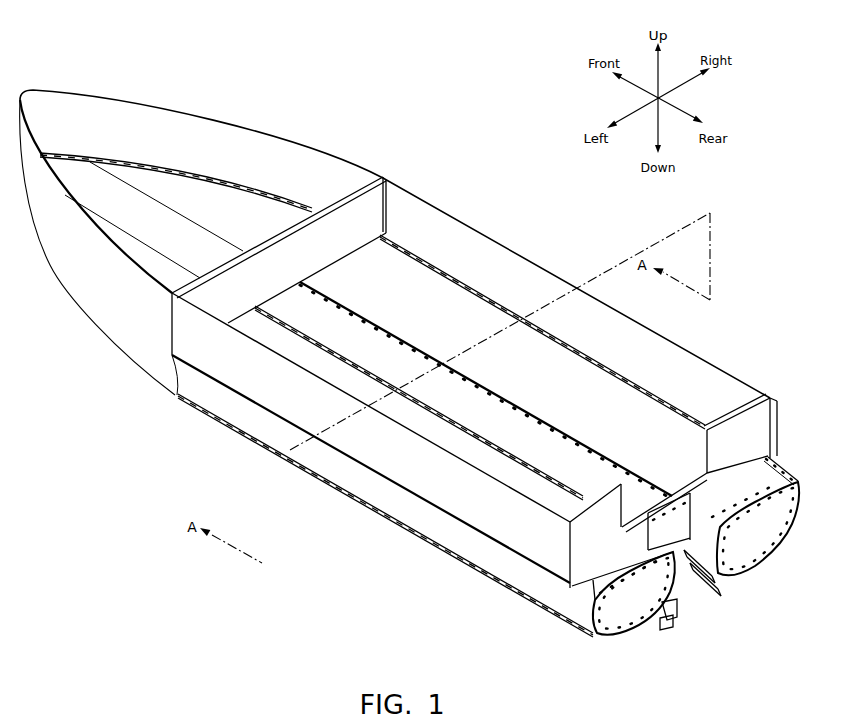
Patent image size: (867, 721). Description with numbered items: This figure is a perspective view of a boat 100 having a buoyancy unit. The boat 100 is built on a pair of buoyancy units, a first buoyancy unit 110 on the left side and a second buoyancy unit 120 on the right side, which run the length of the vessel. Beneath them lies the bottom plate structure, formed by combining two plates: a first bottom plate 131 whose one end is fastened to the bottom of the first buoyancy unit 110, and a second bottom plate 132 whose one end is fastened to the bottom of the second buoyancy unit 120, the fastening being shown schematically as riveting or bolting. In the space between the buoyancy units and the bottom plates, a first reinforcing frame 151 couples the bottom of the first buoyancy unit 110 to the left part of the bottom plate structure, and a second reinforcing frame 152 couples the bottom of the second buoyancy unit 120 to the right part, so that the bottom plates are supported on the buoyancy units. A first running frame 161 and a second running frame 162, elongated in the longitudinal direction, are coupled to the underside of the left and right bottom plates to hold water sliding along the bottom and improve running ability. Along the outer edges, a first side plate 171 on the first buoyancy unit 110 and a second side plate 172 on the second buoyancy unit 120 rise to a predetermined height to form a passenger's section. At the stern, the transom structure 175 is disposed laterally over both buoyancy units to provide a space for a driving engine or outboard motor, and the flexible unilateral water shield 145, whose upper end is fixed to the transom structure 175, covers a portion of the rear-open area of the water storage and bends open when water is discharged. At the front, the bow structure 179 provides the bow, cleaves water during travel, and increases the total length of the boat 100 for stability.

The boat 100 is at (86, 62).
The first buoyancy unit 110 is at (410, 520).
The second buoyancy unit 120 is at (764, 472).
The first bottom plate 131 is at (657, 630).
The second bottom plate 132 is at (727, 577).
The unilateral water shield 145 is at (735, 527).
The first reinforcing frame 151 is at (681, 609).
The second reinforcing frame 152 is at (706, 582).
The first running frame 161 is at (668, 628).
The second running frame 162 is at (712, 600).
The first side plate 171 is at (237, 375).
The second side plate 172 is at (468, 235).
The transom structure 175 is at (589, 526).
The bow structure 179 is at (258, 119).